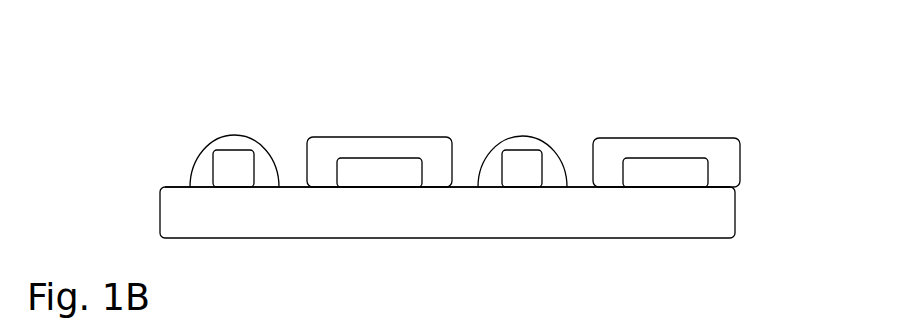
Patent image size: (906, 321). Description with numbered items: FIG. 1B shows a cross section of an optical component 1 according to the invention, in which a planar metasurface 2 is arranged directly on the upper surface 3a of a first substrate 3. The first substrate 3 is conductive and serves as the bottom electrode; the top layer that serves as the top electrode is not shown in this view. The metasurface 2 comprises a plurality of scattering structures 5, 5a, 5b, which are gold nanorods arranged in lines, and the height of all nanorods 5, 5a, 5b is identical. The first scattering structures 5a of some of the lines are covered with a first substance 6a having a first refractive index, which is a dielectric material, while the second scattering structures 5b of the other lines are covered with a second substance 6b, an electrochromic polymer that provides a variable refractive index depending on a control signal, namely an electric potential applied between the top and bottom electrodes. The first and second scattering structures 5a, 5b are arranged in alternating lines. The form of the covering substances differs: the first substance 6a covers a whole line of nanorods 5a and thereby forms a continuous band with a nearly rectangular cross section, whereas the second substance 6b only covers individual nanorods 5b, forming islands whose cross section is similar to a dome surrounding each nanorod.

The optical component 1 is at (469, 137).
The planar metasurface 2 is at (469, 146).
The first substrate 3 is at (720, 215).
The upper surface of the first substrate 3a is at (170, 186).
The scattering structures 5 is at (434, 120).
The first scattering structures 5a is at (376, 165).
The second scattering structures 5b is at (234, 155).
The first substance 6a is at (318, 146).
The second substance 6b is at (270, 159).